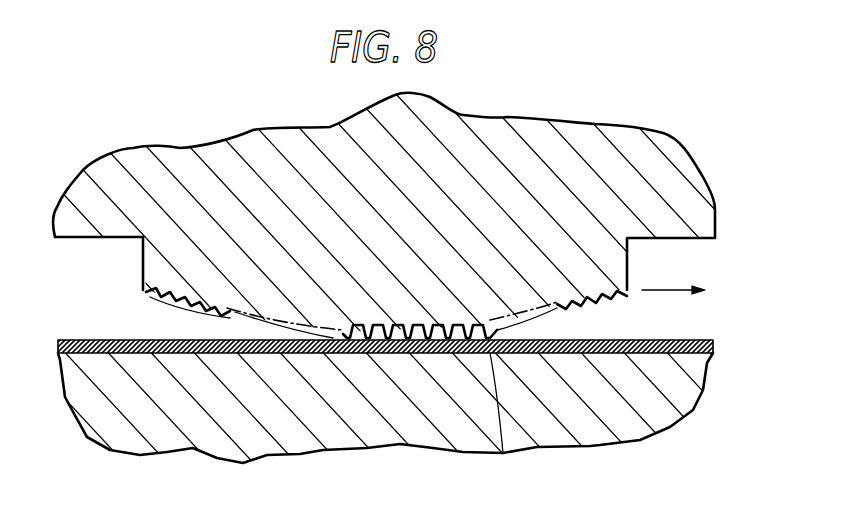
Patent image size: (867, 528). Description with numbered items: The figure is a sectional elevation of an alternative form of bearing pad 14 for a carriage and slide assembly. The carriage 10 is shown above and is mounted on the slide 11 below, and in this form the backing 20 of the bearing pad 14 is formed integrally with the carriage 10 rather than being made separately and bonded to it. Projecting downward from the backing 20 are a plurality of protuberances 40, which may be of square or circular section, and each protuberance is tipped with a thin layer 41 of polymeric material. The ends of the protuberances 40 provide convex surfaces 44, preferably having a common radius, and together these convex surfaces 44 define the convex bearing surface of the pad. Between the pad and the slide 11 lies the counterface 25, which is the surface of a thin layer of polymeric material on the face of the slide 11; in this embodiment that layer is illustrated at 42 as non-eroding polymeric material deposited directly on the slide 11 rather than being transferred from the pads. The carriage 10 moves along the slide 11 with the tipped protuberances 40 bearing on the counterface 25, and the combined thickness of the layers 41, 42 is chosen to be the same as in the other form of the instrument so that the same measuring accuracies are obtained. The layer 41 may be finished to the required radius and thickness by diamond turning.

The carriage 10 is at (558, 138).
The slide 11 is at (87, 393).
The bearing pad 14 is at (528, 292).
The backing 20 is at (378, 285).
The counterface 25 is at (575, 341).
The protuberances 40 is at (172, 290).
The thin layer of polymeric material 41 is at (150, 297).
The thin layer of non-eroding polymeric material 42 is at (642, 341).
The convex surfaces 44 is at (503, 453).